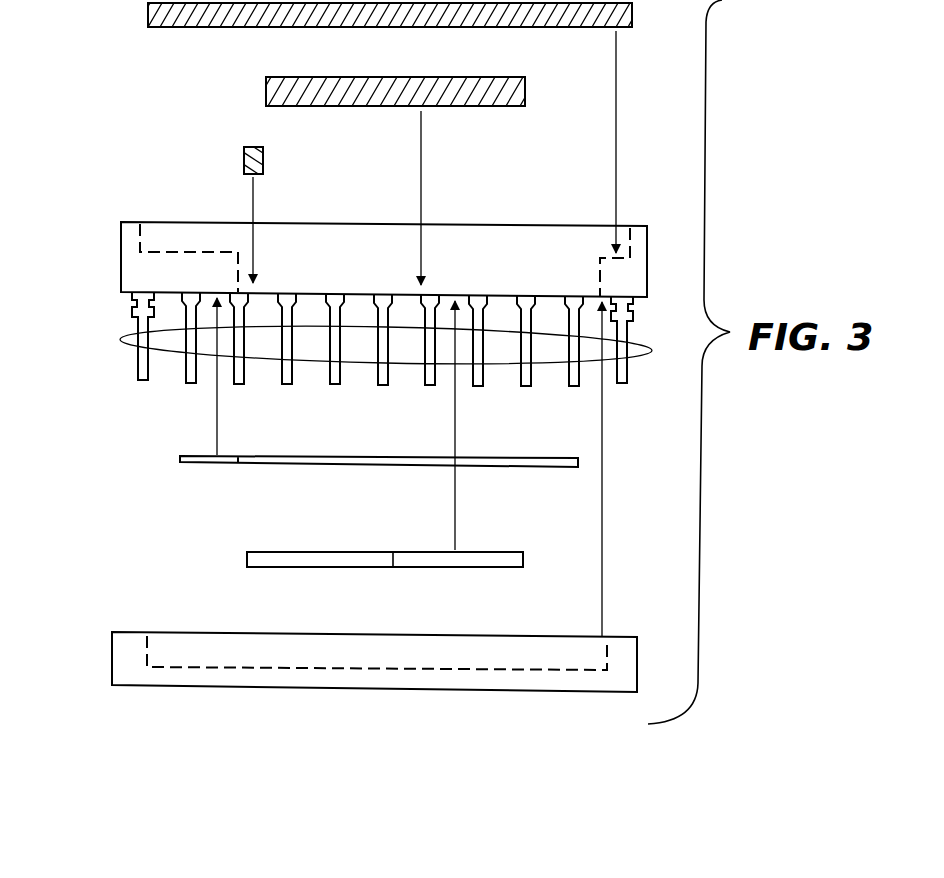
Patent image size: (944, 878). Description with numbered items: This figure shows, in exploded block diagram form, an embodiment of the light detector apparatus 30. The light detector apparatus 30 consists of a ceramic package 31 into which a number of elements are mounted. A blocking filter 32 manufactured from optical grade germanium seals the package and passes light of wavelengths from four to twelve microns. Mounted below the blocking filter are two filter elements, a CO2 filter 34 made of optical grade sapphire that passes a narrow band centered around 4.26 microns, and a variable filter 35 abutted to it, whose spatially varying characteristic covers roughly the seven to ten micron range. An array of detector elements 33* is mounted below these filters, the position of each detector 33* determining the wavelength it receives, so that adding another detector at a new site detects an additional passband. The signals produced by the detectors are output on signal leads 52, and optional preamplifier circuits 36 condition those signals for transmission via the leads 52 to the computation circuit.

The light detector apparatus 30 is at (121, 250).
The ceramic package 31 is at (330, 497).
The blocking filter 32 is at (148, 7).
The detector element 33 is at (180, 458).
The CO2 filter 34 is at (244, 155).
The variable filter 35 is at (266, 87).
The preamplifier circuits 36 is at (247, 556).
The signal leads 52 is at (120, 343).